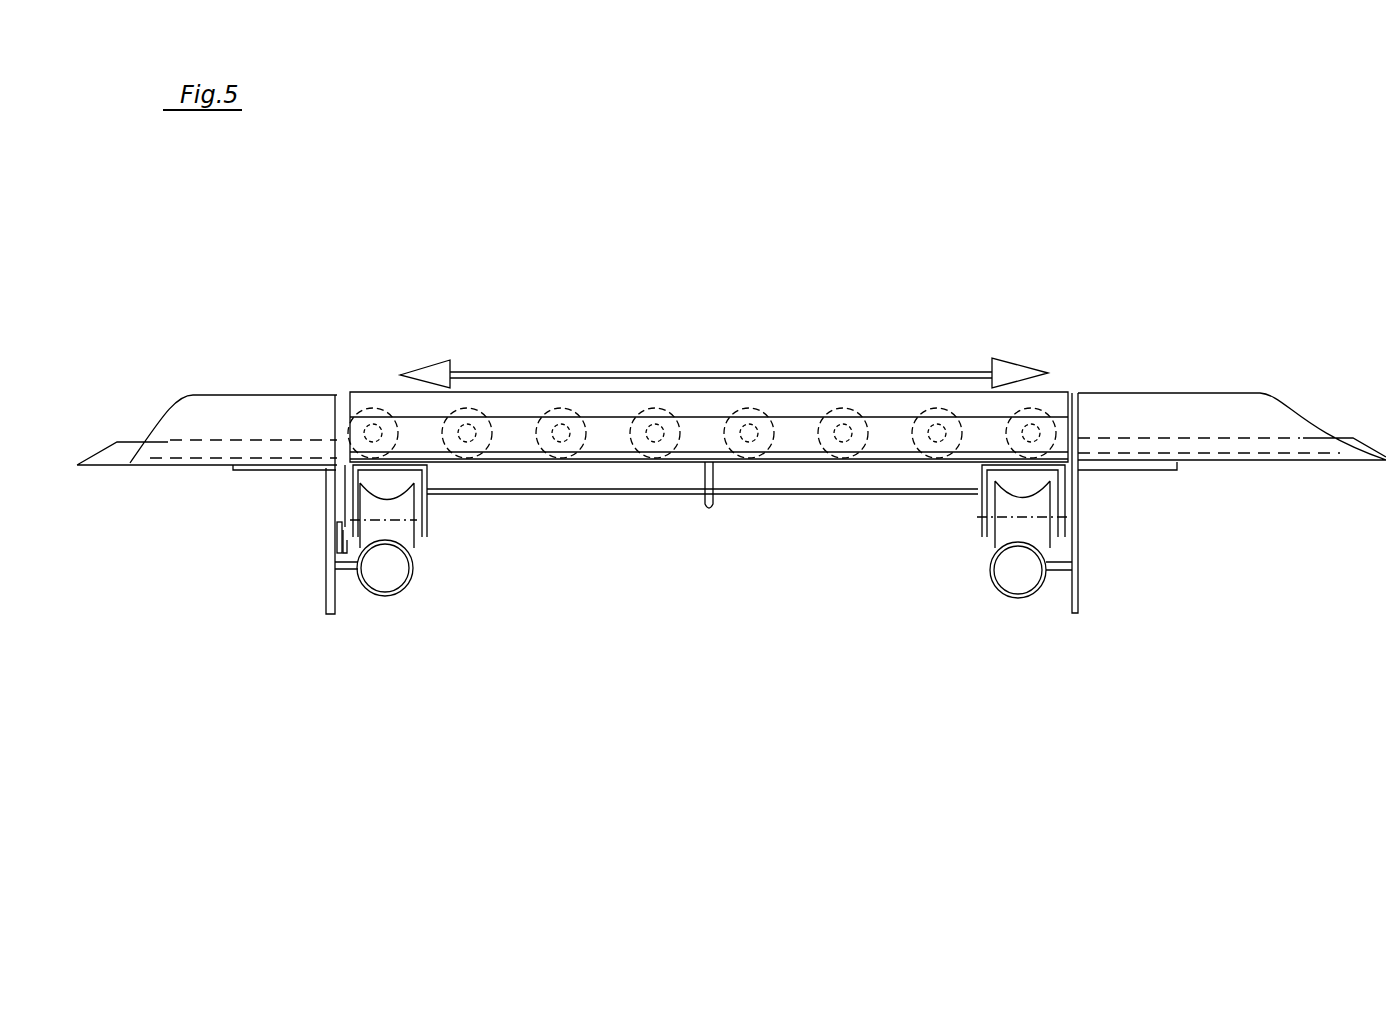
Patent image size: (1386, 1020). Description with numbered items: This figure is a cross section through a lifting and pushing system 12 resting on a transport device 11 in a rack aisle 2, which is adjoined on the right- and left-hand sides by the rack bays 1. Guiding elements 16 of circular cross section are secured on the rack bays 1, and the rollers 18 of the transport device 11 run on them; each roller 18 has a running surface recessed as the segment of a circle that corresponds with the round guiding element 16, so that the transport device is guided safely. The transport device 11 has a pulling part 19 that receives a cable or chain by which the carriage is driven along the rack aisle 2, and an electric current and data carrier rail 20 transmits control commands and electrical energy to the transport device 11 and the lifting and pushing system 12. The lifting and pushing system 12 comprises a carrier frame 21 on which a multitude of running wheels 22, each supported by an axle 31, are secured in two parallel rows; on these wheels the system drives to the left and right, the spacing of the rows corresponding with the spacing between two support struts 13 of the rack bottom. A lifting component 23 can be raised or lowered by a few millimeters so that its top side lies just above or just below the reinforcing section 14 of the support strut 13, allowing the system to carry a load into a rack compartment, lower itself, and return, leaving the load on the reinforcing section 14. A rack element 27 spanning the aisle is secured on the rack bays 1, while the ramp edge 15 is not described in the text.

The rack bay 1 is at (182, 567).
The rack aisle 2 is at (745, 705).
The transport device 11 is at (603, 478).
The lifting and pushing system 12 is at (803, 363).
The support strut 13 is at (153, 472).
The reinforcing section 14 is at (1195, 410).
The ramp edge 15 is at (1320, 440).
The guiding element 16 is at (392, 575).
The roller 18 is at (405, 532).
The pulling part 19 is at (708, 510).
The electric current and data carrier rail 20 is at (333, 553).
The carrier frame 21 is at (1008, 430).
The running wheel 22 is at (965, 428).
The lifting component 23 is at (897, 410).
The rack element 27 is at (320, 615).
The axle 31 is at (557, 428).